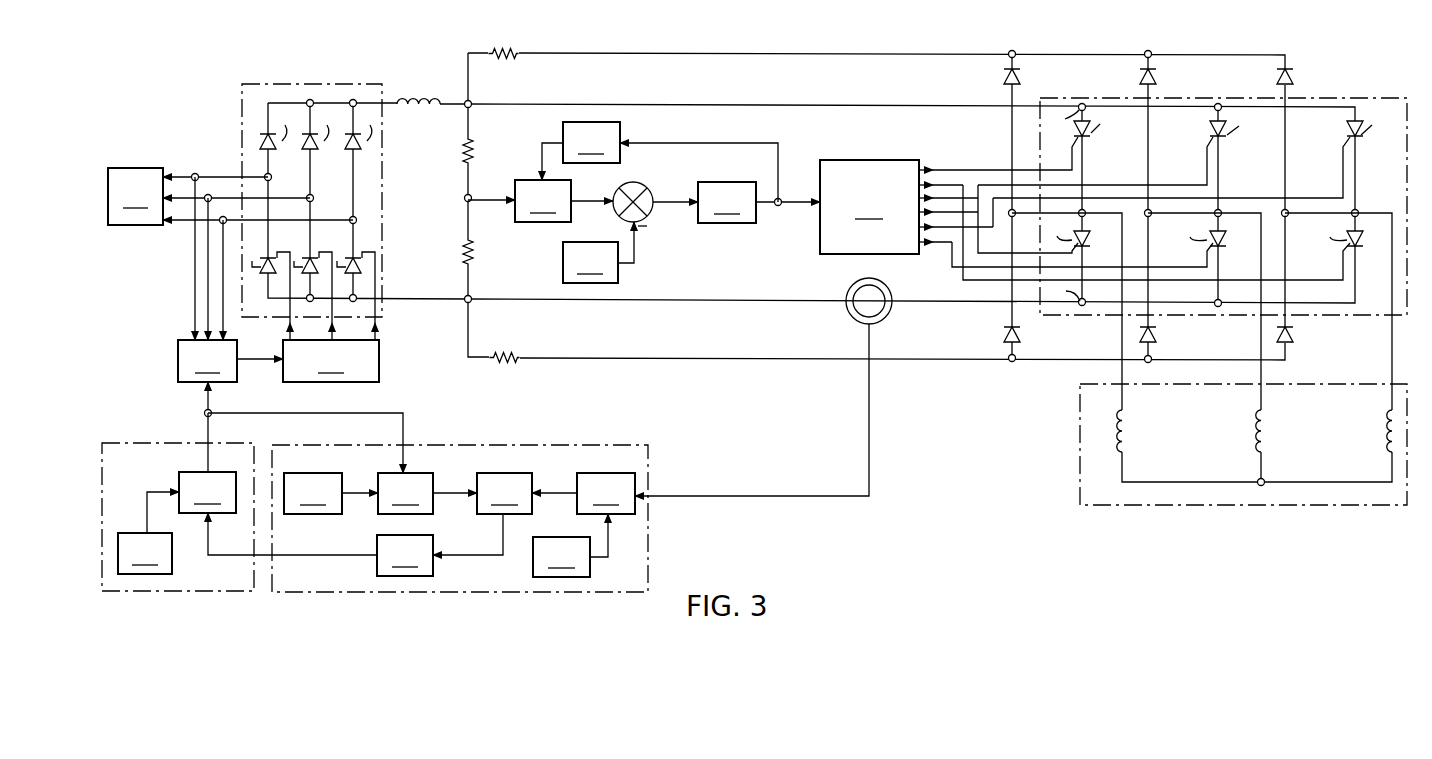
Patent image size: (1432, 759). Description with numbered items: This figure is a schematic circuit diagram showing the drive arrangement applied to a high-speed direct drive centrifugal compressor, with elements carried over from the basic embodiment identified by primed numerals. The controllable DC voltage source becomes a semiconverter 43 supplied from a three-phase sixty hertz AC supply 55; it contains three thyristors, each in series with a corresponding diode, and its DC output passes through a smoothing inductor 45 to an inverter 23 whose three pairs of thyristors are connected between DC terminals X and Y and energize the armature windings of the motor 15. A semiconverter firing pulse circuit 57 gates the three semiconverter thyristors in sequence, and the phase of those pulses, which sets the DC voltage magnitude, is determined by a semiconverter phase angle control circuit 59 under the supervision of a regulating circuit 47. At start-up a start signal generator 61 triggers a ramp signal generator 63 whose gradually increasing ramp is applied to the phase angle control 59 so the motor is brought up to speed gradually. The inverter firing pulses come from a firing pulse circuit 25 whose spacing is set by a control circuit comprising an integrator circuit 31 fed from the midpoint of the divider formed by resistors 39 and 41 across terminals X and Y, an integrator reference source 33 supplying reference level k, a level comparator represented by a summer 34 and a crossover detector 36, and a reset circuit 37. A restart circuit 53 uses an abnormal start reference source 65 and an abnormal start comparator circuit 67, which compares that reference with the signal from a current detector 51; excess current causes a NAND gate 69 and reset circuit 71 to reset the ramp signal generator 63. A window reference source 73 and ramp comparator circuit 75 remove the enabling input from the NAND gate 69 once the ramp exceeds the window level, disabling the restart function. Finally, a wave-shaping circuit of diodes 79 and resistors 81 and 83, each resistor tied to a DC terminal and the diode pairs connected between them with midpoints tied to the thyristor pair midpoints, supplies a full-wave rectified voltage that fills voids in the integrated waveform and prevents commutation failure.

The motor 15 is at (1079, 416).
The inverter 23 is at (1343, 100).
The firing pulse circuit 25 is at (876, 207).
The integrator circuit 31 is at (543, 201).
The integrator reference source 33 is at (605, 252).
The summer 34 is at (638, 184).
The crossover detector 36 is at (727, 202).
The reset circuit 37 is at (591, 142).
The resistor 39 is at (462, 153).
The resistor 41 is at (464, 249).
The semiconverter 43 is at (242, 98).
The smoothing inductor 45 is at (414, 108).
The regulating circuit 47 is at (163, 442).
The current detector 51 is at (884, 290).
The restart circuit 53 is at (576, 445).
The three-phase 60 Hz AC supply 55 is at (230, 179).
The semiconverter firing pulse circuit 57 is at (328, 317).
The semiconverter phase angle control circuit 59 is at (207, 361).
The start signal generator 61 is at (145, 553).
The ramp signal generator 63 is at (207, 492).
The abnormal start reference source 65 is at (561, 557).
The abnormal start comparator circuit 67 is at (606, 493).
The NAND gate 69 is at (504, 493).
The reset circuit 71 is at (405, 555).
The window reference source 73 is at (313, 493).
The ramp comparator circuit 75 is at (405, 493).
The diodes 79 is at (1004, 77).
The resistor 81 is at (506, 49).
The resistor 83 is at (505, 362).